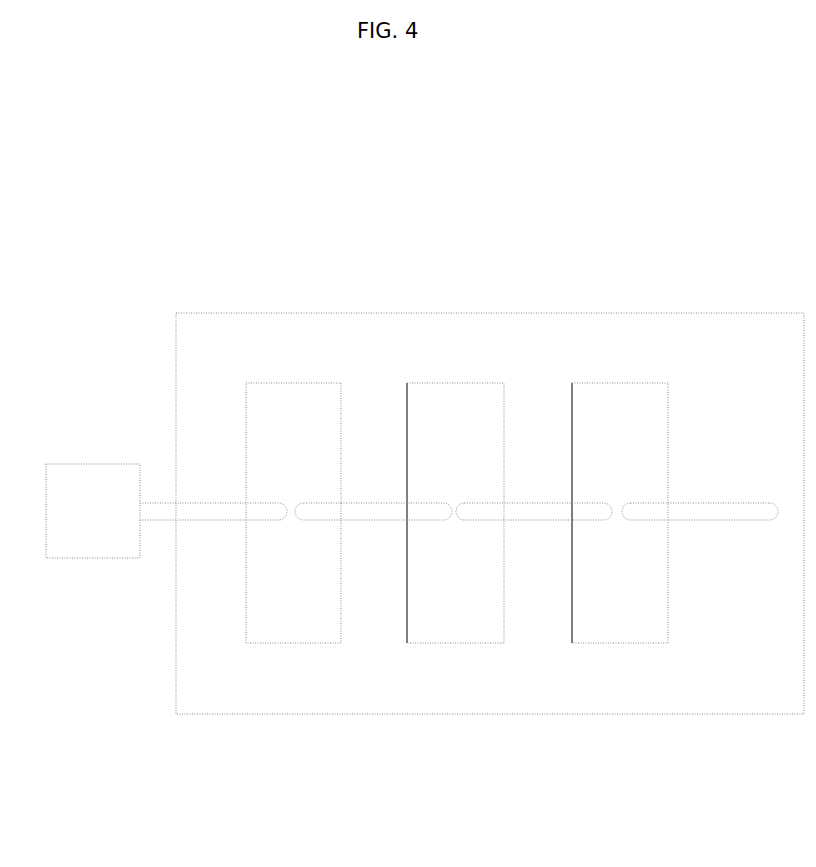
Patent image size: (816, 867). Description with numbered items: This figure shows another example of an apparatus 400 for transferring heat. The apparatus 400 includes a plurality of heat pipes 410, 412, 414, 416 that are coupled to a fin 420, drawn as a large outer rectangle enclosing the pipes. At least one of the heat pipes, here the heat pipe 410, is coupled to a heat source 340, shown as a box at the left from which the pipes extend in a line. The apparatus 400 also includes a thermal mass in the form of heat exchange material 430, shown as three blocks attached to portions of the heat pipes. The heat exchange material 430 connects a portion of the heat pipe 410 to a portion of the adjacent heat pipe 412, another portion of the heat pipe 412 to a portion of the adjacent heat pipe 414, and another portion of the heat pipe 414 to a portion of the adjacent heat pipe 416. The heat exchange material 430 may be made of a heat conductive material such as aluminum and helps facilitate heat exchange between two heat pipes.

The apparatus 400 is at (736, 42).
The heat source 340 is at (83, 558).
The heat pipe 410 is at (210, 520).
The heat pipe 412 is at (375, 520).
The heat pipe 414 is at (535, 520).
The heat pipe 416 is at (699, 520).
The fin 420 is at (680, 313).
The heat exchange material 430 is at (620, 384).